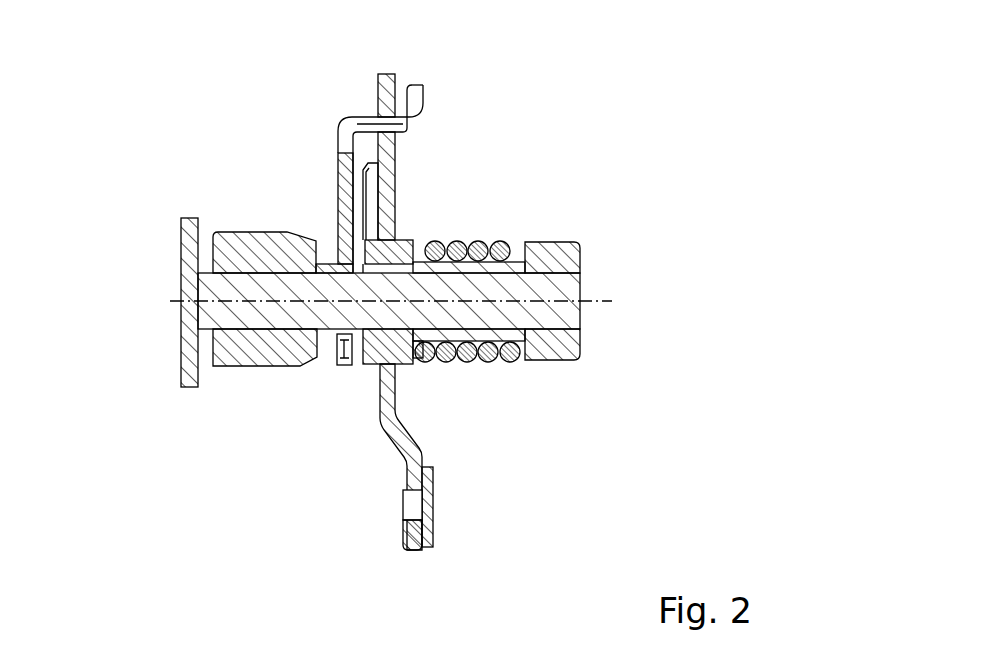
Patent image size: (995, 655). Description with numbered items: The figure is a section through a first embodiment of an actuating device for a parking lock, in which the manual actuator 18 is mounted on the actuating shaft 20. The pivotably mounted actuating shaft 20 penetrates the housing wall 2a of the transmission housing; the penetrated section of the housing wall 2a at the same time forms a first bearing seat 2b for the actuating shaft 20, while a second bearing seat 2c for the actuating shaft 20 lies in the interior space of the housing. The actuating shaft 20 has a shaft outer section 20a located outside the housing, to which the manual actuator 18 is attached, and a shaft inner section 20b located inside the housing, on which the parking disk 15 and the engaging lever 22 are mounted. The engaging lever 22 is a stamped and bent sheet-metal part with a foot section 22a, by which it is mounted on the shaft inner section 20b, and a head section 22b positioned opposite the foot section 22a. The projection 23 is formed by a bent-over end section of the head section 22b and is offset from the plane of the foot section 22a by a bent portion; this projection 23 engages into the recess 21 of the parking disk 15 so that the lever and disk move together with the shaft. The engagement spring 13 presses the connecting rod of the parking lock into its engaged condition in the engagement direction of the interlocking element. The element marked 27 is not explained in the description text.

The housing wall 2a is at (238, 255).
The first bearing seat 2b is at (265, 316).
The second bearing seat 2c is at (548, 322).
The engagement spring 13 is at (483, 240).
The parking disk 15 is at (397, 423).
The manual actuator 18 is at (188, 283).
The actuating shaft 20 is at (540, 290).
The shaft outer section 20a is at (210, 309).
The shaft inner section 20b is at (339, 311).
The recess 21 is at (402, 144).
The engaging lever 22 is at (336, 262).
The foot section 22a is at (345, 366).
The head section 22b is at (350, 113).
The projection 23 is at (403, 125).
The shoulder 27 is at (317, 241).